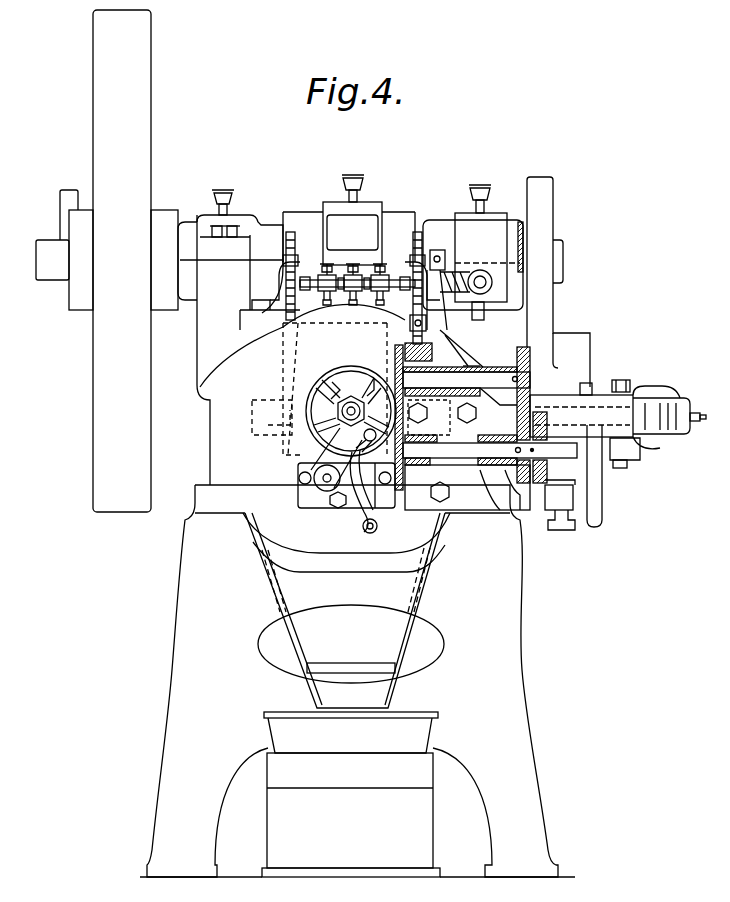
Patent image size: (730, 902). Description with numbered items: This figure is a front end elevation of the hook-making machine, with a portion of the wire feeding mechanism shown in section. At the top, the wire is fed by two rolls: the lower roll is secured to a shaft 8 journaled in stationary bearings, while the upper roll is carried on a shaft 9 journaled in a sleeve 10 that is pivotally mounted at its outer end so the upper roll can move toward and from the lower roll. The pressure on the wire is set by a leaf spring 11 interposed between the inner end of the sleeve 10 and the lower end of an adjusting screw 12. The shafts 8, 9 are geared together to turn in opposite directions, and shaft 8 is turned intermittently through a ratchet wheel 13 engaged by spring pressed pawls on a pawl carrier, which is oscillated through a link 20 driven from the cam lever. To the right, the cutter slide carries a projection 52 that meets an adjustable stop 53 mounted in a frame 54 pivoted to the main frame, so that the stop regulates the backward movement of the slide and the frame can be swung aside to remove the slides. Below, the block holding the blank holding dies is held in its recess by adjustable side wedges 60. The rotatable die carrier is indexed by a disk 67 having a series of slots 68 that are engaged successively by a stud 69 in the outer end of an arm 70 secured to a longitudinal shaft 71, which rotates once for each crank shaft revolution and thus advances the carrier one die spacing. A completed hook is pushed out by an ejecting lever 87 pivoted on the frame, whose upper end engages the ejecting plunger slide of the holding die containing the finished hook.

The shaft 8 is at (458, 444).
The shaft 9 is at (536, 378).
The sleeve 10 is at (463, 365).
The leaf spring 11 is at (440, 345).
The adjusting screw 12 is at (445, 330).
The ratchet wheel 13 is at (542, 482).
The link 20 is at (562, 502).
The projection 52 is at (650, 432).
The adjustable stop 53 is at (661, 428).
The frame 54 is at (660, 381).
The adjustable side wedges 60 is at (285, 338).
The disk 67 is at (347, 380).
The slots 68 is at (331, 392).
The stud 69 is at (364, 444).
The arm 70 is at (300, 457).
The longitudinal shaft 71 is at (330, 481).
The ejecting lever 87 is at (358, 503).